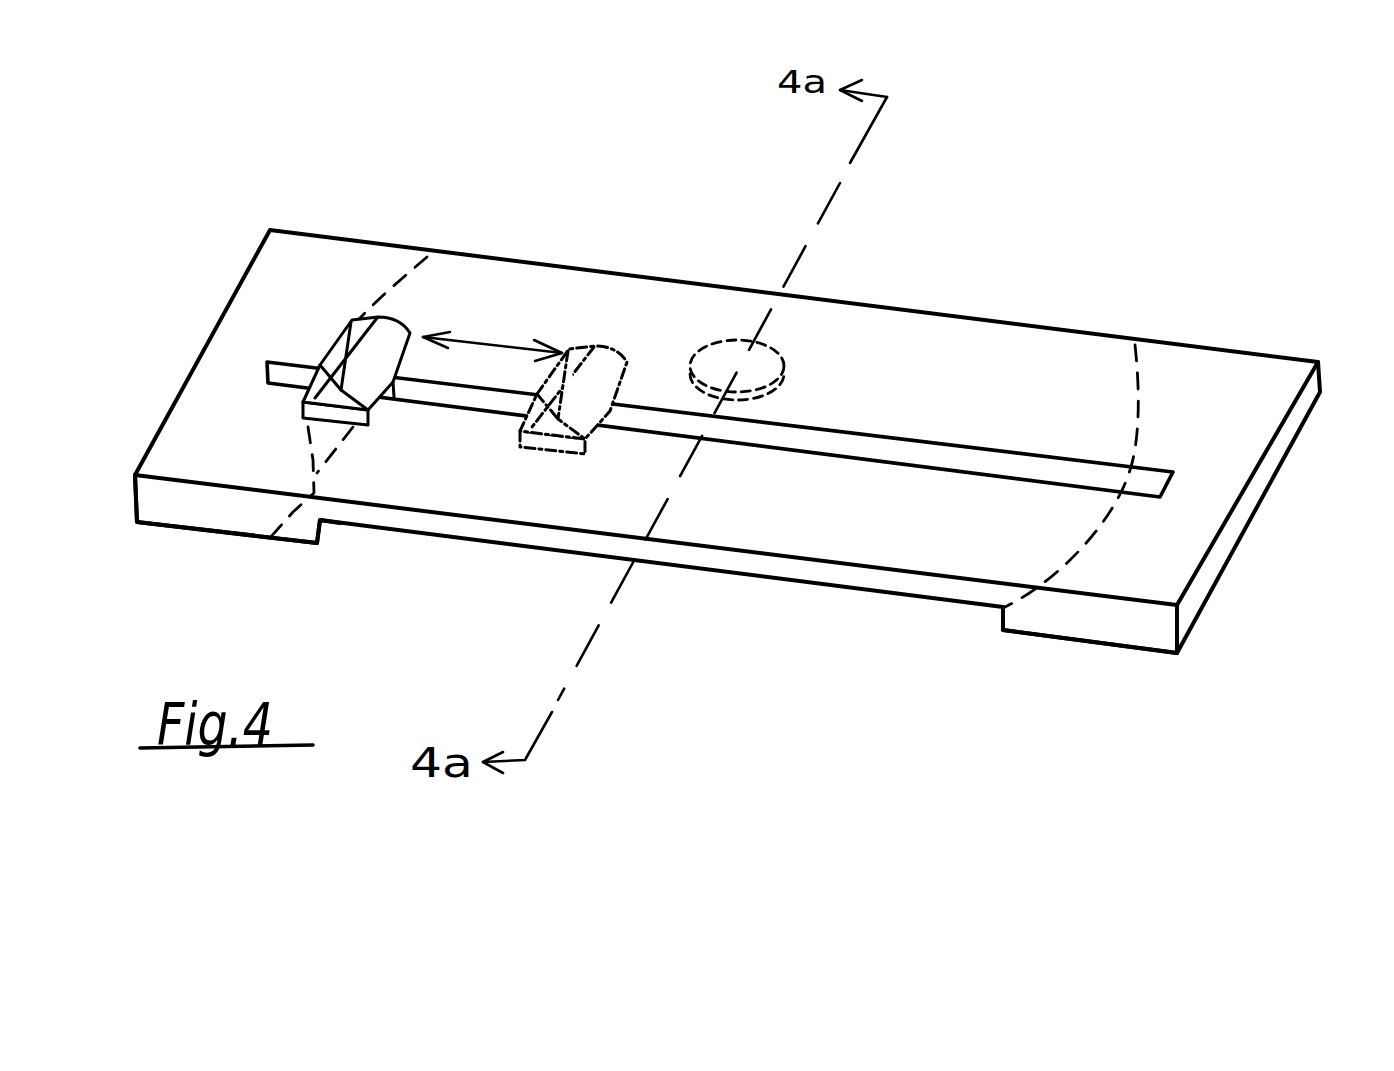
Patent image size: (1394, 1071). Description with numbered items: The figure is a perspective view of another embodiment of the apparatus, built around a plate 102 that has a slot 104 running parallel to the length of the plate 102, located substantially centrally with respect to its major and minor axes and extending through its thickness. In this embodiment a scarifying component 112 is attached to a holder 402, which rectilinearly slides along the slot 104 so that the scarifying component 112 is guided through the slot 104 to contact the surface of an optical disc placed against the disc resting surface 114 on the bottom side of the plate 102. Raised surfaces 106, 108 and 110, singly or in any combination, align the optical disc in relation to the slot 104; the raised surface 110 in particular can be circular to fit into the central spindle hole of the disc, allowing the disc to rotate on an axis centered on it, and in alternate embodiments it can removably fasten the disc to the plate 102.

The plate 102 is at (1213, 372).
The slot 104 is at (893, 452).
The raised surface 106 is at (320, 522).
The raised surface 108 is at (993, 622).
The raised surface 110 is at (752, 360).
The scarifying component 112 is at (263, 545).
The disc resting surface 114 is at (530, 287).
The holder 402 is at (330, 373).